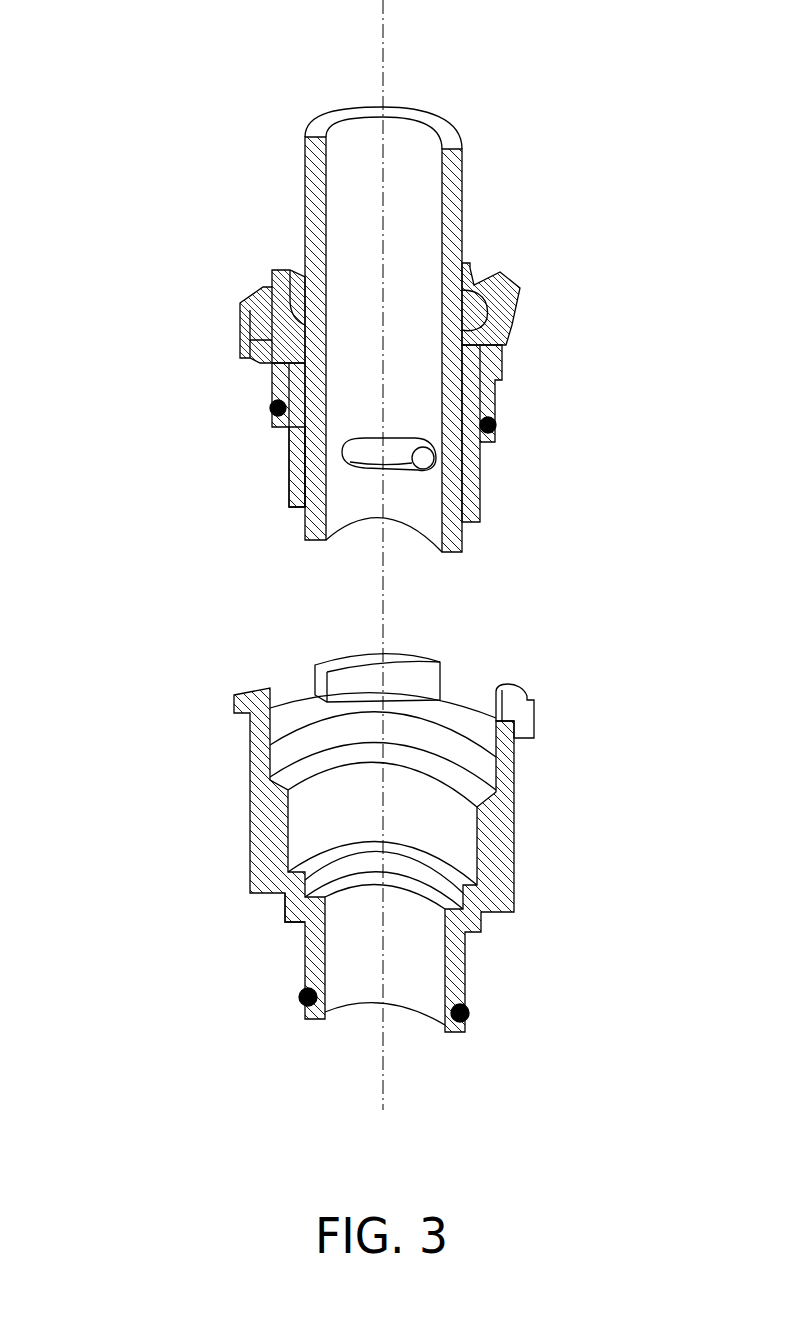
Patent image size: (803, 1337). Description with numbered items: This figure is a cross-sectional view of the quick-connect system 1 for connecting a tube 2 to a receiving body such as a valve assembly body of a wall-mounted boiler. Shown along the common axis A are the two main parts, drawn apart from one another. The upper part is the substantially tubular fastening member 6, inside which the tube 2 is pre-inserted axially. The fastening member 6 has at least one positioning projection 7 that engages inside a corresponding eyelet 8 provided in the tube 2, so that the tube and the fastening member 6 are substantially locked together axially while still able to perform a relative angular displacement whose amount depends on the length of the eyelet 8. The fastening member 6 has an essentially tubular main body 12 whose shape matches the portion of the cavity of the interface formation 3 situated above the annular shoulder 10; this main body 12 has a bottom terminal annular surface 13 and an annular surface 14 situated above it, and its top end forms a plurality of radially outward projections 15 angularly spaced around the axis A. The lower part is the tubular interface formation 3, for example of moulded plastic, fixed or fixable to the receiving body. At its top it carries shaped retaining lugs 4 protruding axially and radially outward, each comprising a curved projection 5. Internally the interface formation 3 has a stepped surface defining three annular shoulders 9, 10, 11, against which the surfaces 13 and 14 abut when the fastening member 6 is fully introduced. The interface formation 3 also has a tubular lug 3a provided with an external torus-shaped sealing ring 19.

The quick-connect system 1 is at (227, 440).
The tube 2 is at (462, 188).
The tubular interface formation 3 is at (243, 847).
The tubular lug 3a is at (468, 969).
The retaining lugs 4 is at (230, 698).
The curved projection 5 is at (532, 730).
The fastening member 6 is at (517, 380).
The positioning projection 7 is at (428, 470).
The eyelet 8 is at (378, 467).
The annular shoulder 9 is at (278, 897).
The annular shoulder 10 is at (297, 850).
The annular shoulder 11 is at (317, 763).
The main body 12 is at (278, 438).
The bottom terminal annular surface 13 is at (297, 510).
The annular surface 14 is at (275, 428).
The projections 15 is at (260, 293).
The sealing ring 19 is at (297, 1007).
The axis A is at (386, 62).